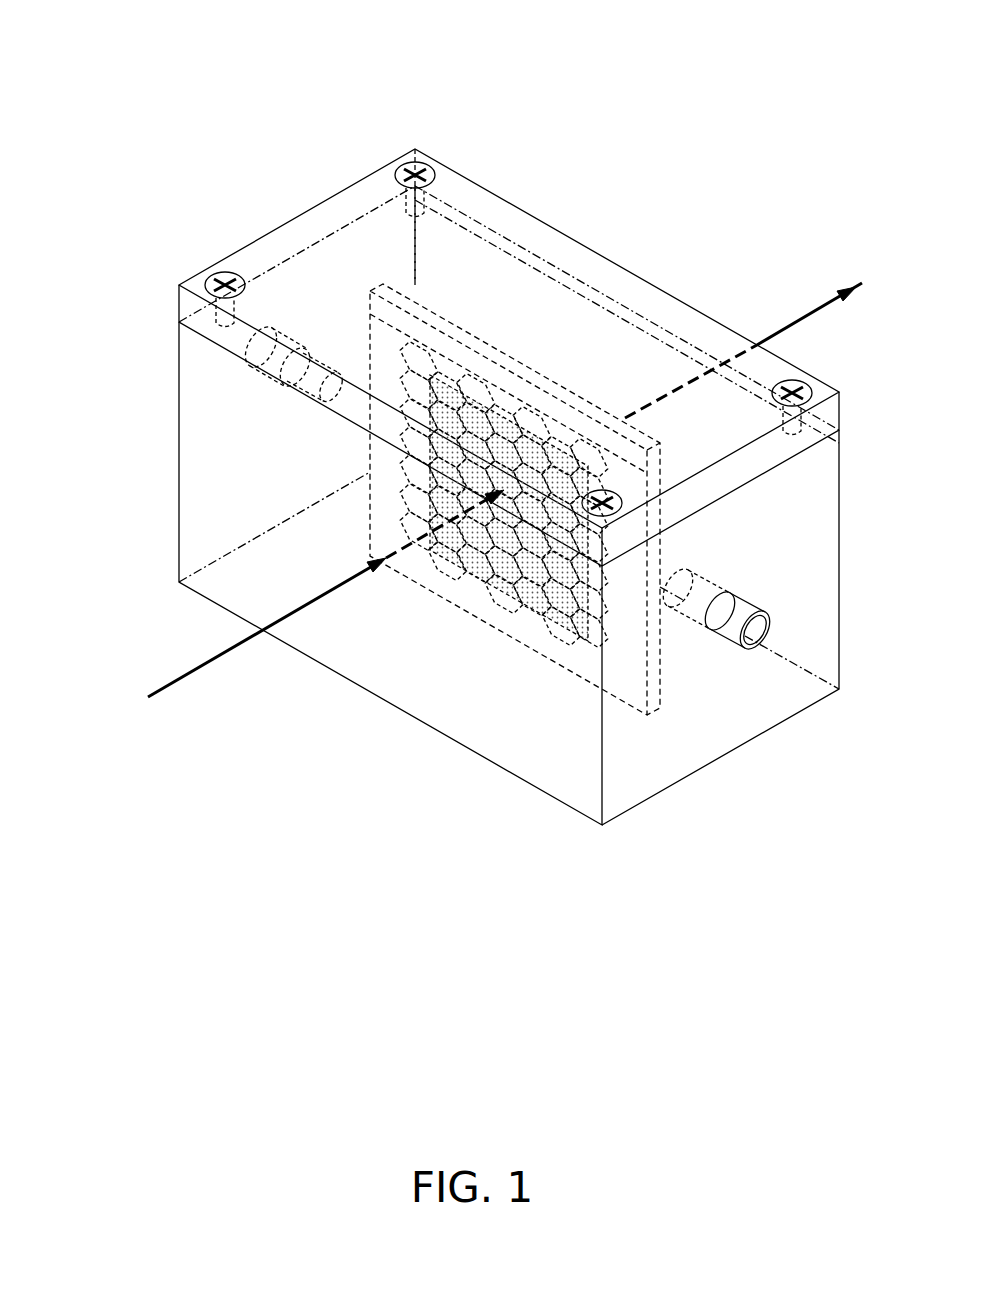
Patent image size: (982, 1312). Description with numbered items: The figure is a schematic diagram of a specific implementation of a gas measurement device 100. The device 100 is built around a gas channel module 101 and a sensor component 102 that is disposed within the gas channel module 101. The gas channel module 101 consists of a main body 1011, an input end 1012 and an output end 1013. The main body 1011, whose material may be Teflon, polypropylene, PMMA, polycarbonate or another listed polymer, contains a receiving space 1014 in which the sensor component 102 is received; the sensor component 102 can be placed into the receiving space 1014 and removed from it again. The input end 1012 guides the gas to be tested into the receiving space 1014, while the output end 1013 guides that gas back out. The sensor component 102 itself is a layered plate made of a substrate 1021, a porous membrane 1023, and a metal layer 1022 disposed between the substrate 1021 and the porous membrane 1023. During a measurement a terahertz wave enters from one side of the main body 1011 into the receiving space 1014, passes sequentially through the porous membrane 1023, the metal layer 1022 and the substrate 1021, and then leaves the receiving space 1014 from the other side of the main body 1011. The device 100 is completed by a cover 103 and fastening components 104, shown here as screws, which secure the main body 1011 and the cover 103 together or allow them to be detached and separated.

The gas measurement device 100 is at (152, 45).
The gas channel module 101 is at (93, 281).
The sensor component 102 is at (476, 332).
The cover 103 is at (187, 310).
The fastening components 104 is at (432, 170).
The main body 1011 is at (185, 425).
The input end 1012 is at (752, 642).
The output end 1013 is at (270, 326).
The receiving space 1014 is at (575, 728).
The substrate 1021 is at (530, 368).
The metal layer 1022 is at (500, 560).
The porous membrane 1023 is at (465, 505).